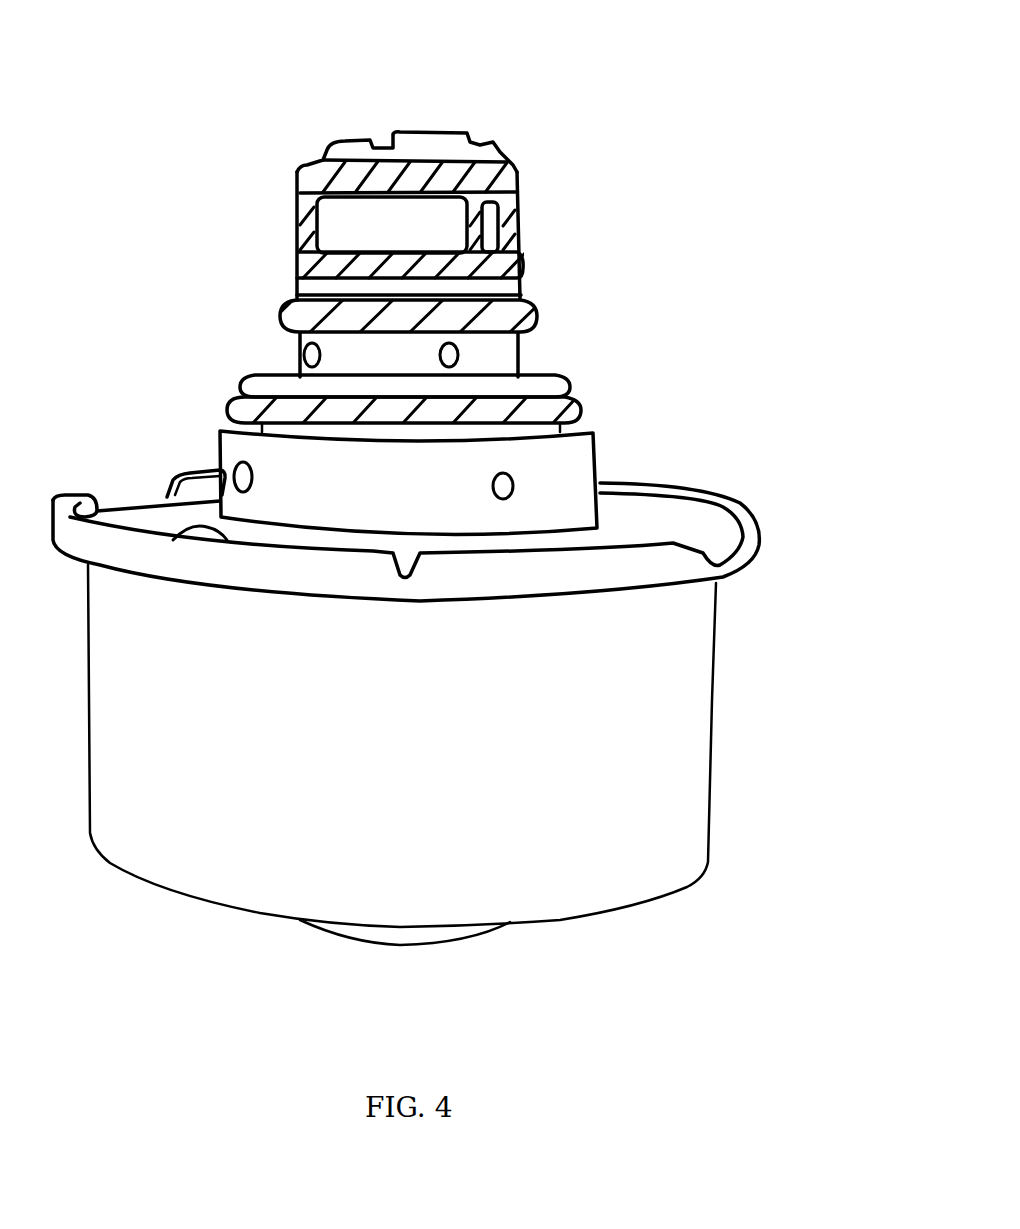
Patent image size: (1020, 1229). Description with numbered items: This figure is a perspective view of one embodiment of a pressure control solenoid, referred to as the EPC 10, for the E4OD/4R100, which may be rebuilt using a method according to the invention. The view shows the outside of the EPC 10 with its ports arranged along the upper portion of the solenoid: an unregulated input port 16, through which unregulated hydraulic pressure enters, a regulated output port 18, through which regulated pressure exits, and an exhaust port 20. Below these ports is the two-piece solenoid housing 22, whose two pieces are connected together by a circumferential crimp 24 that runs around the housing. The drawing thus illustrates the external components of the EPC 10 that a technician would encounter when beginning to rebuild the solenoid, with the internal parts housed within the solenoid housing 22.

The EPC 10 is at (719, 102).
The unregulated input port 16 is at (498, 230).
The regulated output port 18 is at (458, 353).
The exhaust port 20 is at (513, 486).
The two-piece solenoid housing 22 is at (673, 536).
The circumferential crimp 24 is at (187, 477).